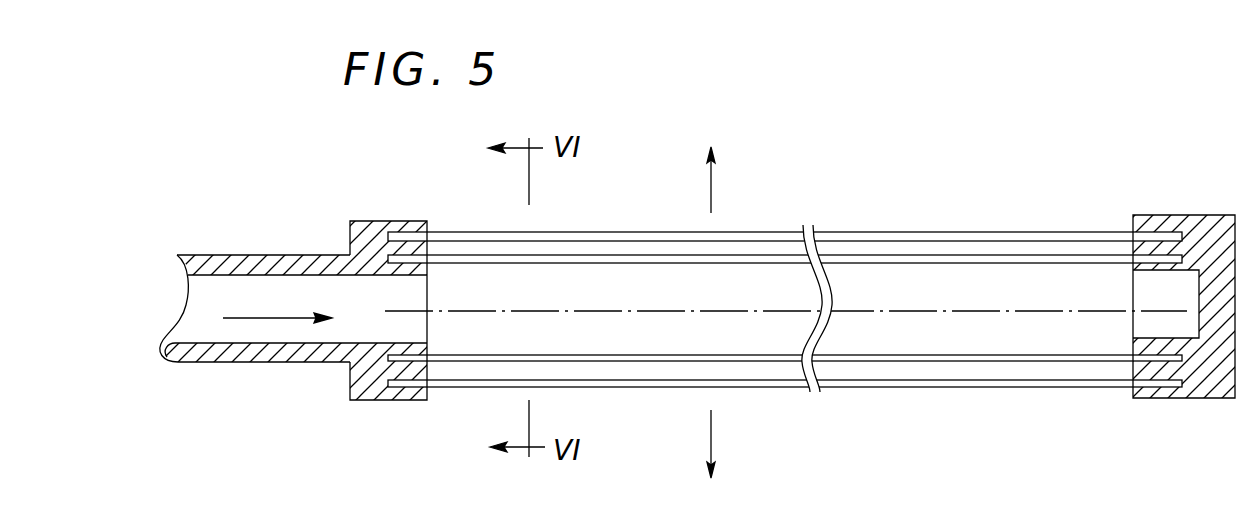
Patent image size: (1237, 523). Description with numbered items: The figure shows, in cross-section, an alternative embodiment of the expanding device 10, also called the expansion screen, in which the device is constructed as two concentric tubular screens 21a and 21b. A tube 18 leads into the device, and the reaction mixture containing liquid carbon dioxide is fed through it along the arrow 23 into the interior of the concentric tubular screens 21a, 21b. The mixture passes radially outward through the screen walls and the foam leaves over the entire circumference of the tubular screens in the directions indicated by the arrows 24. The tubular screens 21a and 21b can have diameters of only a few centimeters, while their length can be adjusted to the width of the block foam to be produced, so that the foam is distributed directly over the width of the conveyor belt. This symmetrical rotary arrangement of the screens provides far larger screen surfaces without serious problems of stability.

The expanding device 10 is at (843, 185).
The tube 18 is at (262, 356).
The tubular screen 21a is at (937, 255).
The tubular screen 21b is at (1017, 232).
The arrow 23 is at (278, 316).
The arrows 24 is at (711, 176).